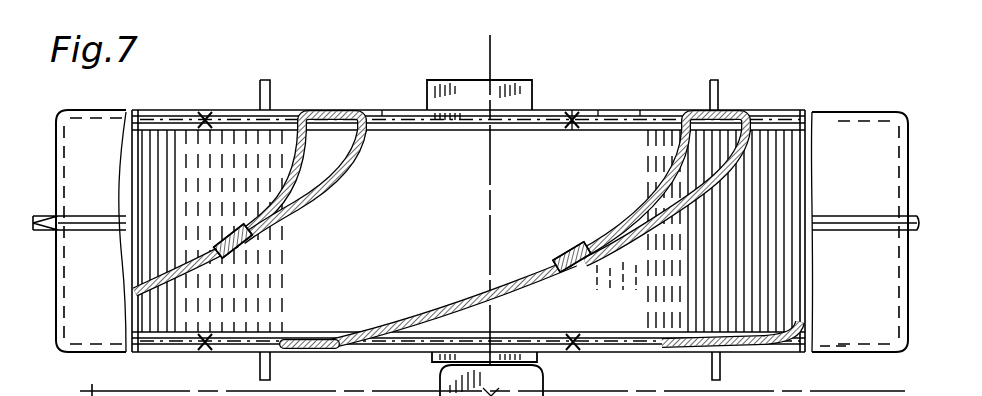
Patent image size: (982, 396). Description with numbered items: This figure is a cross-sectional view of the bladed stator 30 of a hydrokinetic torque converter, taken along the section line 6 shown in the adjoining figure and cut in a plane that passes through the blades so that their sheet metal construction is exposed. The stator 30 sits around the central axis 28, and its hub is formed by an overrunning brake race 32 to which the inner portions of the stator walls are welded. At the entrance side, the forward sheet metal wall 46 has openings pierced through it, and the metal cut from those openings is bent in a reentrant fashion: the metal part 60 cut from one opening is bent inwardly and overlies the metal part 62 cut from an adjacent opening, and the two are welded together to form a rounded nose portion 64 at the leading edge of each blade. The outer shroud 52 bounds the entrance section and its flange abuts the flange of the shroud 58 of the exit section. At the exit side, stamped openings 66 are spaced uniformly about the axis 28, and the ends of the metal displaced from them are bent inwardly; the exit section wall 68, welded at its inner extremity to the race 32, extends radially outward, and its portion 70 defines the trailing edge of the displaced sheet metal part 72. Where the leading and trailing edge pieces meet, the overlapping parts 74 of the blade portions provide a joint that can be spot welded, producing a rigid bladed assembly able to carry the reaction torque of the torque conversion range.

The section line 6- 6 is at (487, 379).
The axis 28 is at (488, 46).
The bladed stator 30 is at (580, 108).
The overrunning brake race 32 is at (640, 113).
The forward sheet metal wall 46 is at (548, 112).
The outer shroud 52 is at (875, 125).
The shroud 58 is at (848, 338).
The metal part 60 is at (336, 178).
The metal part 62 is at (288, 172).
The rounded nose portion 64 is at (330, 112).
The openings 66 is at (290, 335).
The wall 68 is at (572, 350).
The portion of the wall 70 is at (312, 350).
The sheet metal part 72 is at (250, 258).
The overlapping parts 74 is at (240, 228).